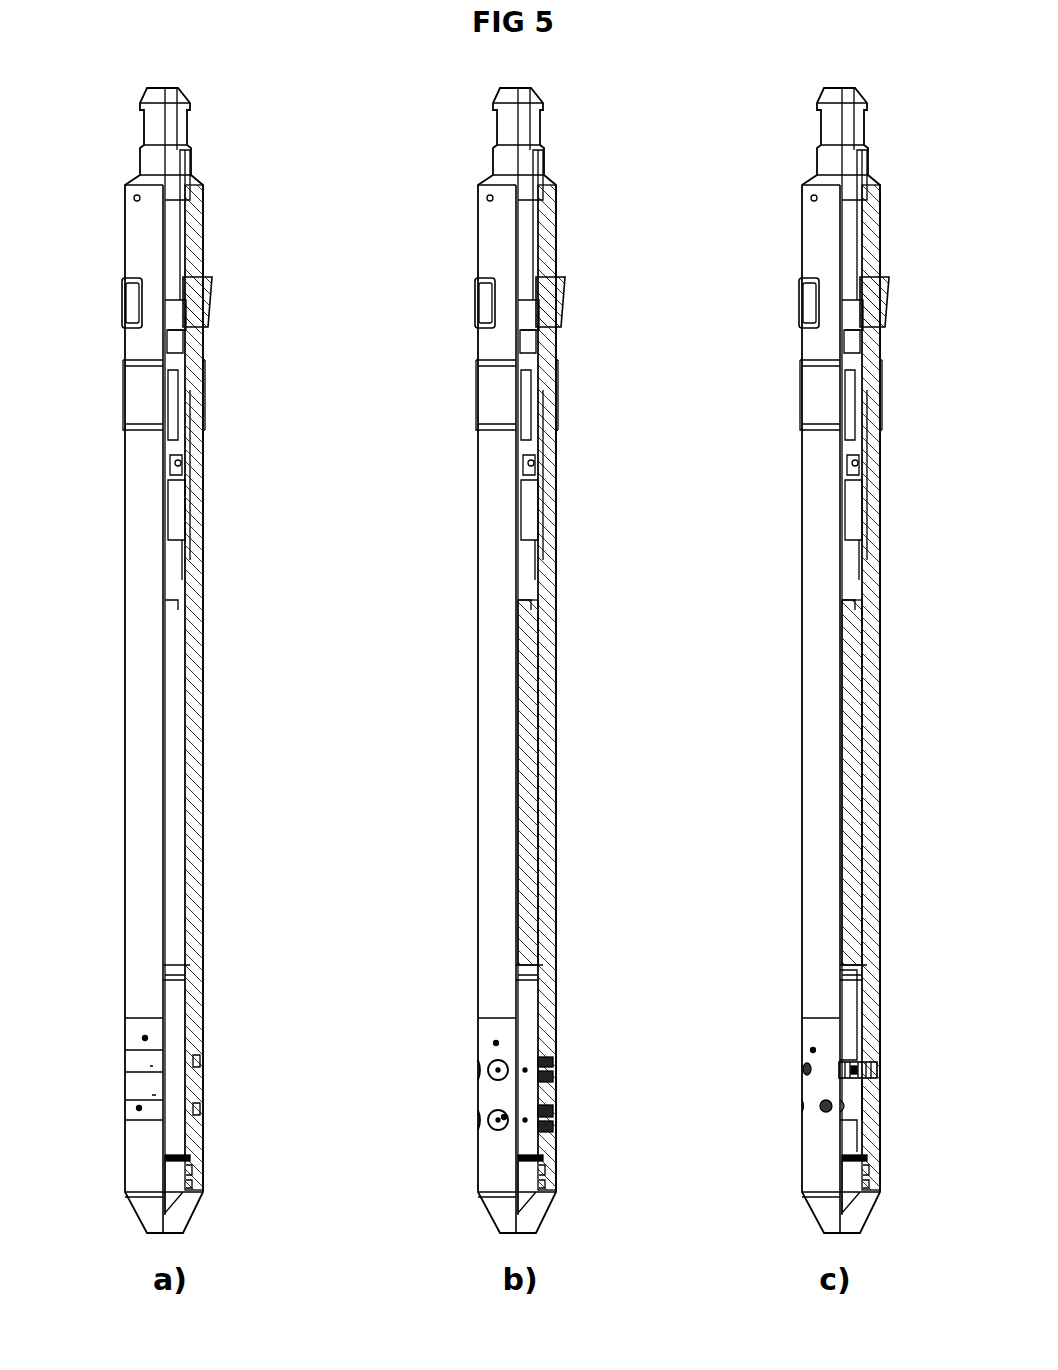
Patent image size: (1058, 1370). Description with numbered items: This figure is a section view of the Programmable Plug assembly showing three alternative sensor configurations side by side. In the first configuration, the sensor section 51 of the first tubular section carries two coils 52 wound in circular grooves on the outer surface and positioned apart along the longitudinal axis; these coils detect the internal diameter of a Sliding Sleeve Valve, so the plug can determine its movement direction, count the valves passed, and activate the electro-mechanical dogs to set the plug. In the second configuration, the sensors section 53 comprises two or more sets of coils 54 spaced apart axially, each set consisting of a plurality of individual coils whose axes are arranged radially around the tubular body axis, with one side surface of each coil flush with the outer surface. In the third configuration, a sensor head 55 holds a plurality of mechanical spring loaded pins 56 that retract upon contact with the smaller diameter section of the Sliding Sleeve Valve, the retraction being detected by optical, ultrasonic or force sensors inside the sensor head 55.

The sensor section 51 is at (145, 1038).
The coils 52 is at (139, 1108).
The sensors section 53 is at (496, 1043).
The sets of coils 54 is at (504, 1117).
The sensor head 55 is at (813, 1050).
The mechanical spring loaded pins 56 is at (865, 1068).